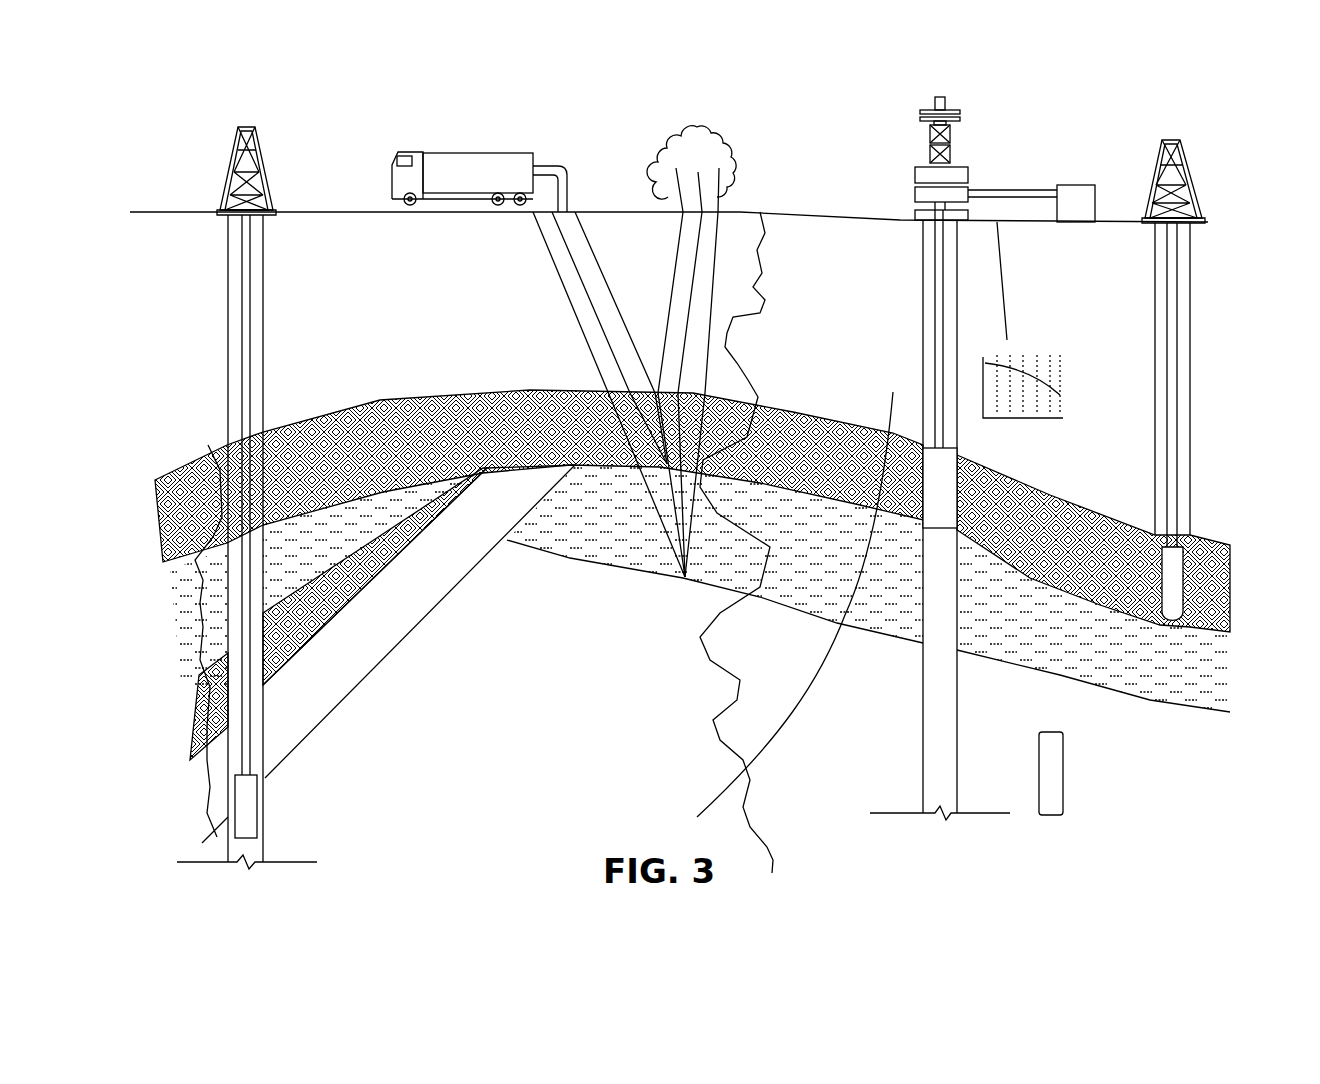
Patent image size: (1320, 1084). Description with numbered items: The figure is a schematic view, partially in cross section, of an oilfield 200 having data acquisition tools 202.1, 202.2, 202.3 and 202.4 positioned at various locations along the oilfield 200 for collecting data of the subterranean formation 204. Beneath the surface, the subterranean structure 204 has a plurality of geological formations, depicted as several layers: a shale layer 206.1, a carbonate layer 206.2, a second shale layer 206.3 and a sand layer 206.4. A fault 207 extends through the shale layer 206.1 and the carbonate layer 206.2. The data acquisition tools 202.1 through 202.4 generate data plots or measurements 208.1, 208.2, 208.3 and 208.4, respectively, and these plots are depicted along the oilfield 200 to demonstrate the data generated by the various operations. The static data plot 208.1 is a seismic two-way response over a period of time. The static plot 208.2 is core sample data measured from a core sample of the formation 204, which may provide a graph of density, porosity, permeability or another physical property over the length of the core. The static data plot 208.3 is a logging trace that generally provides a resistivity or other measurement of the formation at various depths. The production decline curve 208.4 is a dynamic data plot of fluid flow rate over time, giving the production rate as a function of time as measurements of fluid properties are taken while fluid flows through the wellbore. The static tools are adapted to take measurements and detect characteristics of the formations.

The oilfield 200 is at (1145, 148).
The data acquisition tool 202.1 is at (453, 155).
The data acquisition tool 202.2 is at (1185, 587).
The data acquisition tool 202.3 is at (258, 808).
The data acquisition tool 202.4 is at (960, 505).
The subterranean formation 204 is at (559, 659).
The shale layer 206.1 is at (374, 466).
The carbonate layer 206.2 is at (309, 559).
The shale layer 206.3 is at (359, 589).
The sand layer 206.4 is at (402, 629).
The fault 207 is at (892, 393).
The static data plot 208.1 is at (727, 700).
The static data plot 208.2 is at (1032, 813).
The static data plot 208.3 is at (200, 612).
The production decline curve 208.4 is at (1025, 418).